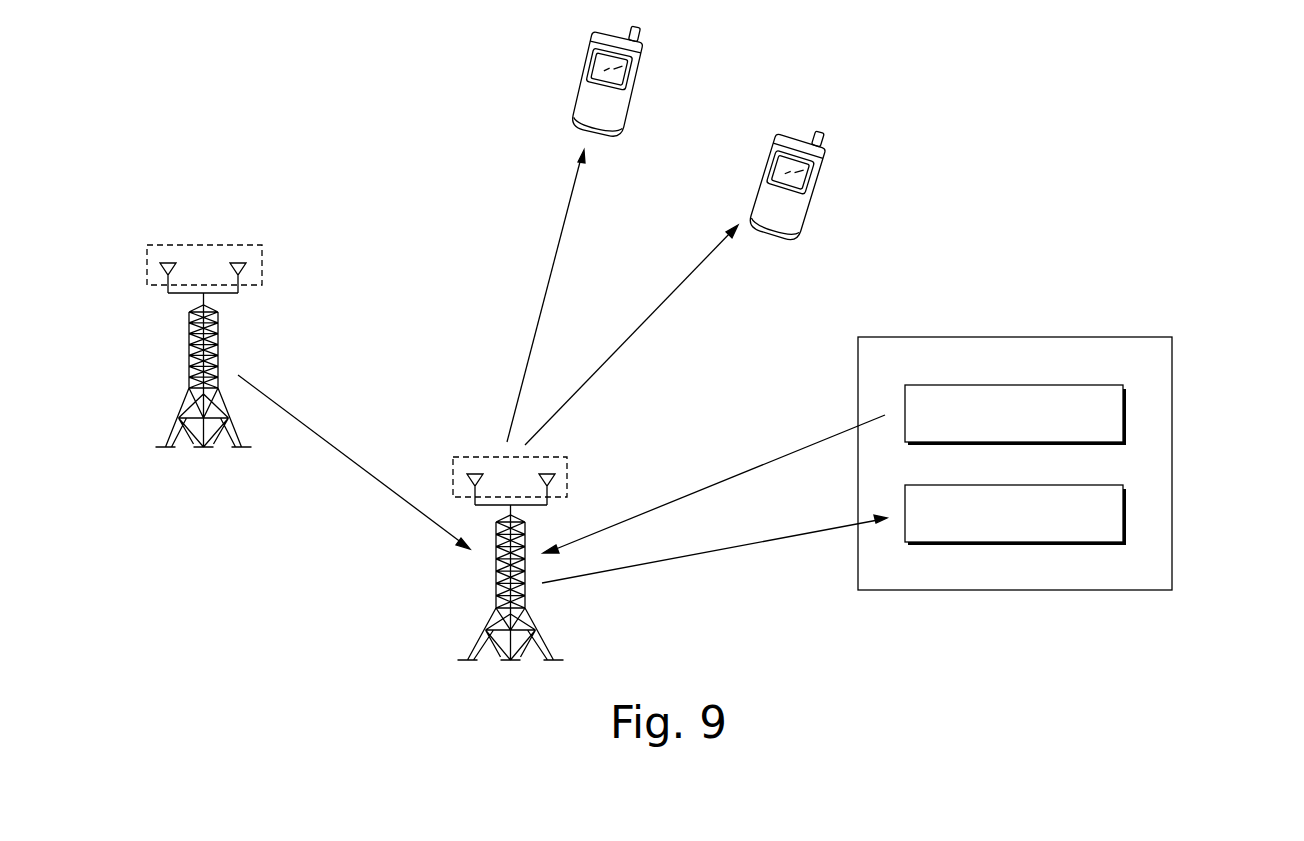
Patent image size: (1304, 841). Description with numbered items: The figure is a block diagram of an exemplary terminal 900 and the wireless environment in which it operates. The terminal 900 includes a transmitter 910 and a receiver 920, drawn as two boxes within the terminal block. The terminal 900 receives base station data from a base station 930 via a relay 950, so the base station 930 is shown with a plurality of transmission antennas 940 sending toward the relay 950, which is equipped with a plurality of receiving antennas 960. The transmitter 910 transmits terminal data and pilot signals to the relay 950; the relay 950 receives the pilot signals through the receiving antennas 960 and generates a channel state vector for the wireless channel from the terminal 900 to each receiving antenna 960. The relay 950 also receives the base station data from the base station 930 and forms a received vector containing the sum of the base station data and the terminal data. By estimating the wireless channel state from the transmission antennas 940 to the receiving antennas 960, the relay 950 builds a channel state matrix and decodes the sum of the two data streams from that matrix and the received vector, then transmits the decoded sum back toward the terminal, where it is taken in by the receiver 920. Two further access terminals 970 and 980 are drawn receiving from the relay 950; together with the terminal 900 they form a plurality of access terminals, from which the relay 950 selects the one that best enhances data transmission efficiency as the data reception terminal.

The terminal 900 is at (1172, 337).
The transmitter 910 is at (1126, 410).
The receiver 920 is at (1126, 510).
The base station 930 is at (190, 340).
The transmission antennas 940 is at (147, 245).
The relay 950 is at (496, 572).
The receiving antennas 960 is at (453, 457).
The access terminal 970 is at (816, 189).
The access terminal 980 is at (582, 66).